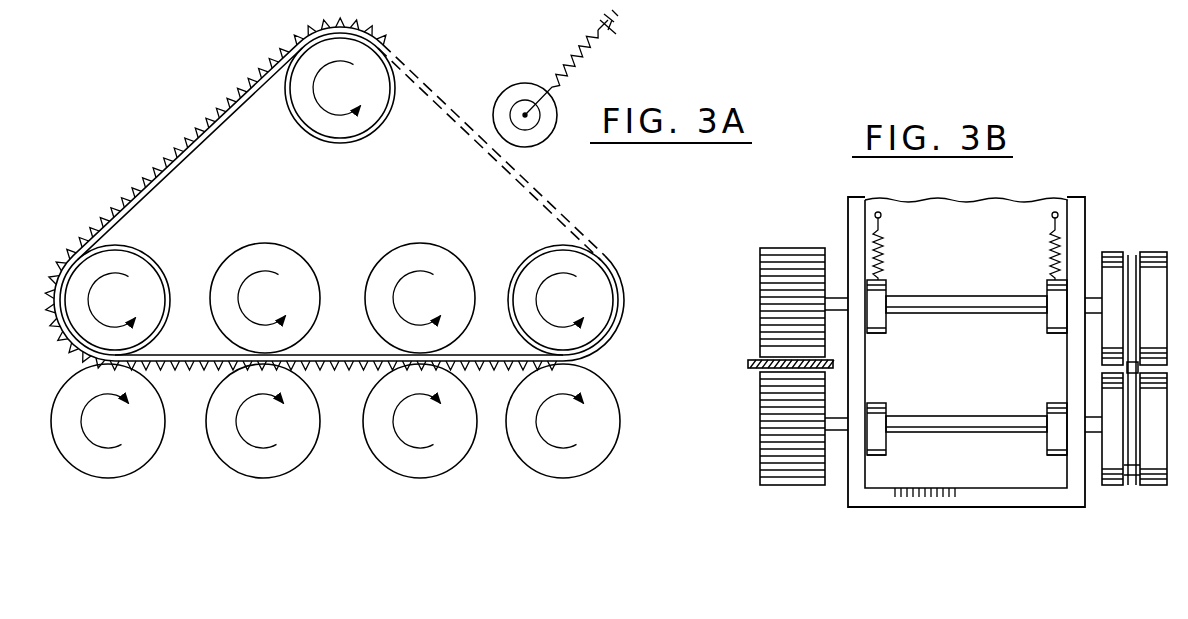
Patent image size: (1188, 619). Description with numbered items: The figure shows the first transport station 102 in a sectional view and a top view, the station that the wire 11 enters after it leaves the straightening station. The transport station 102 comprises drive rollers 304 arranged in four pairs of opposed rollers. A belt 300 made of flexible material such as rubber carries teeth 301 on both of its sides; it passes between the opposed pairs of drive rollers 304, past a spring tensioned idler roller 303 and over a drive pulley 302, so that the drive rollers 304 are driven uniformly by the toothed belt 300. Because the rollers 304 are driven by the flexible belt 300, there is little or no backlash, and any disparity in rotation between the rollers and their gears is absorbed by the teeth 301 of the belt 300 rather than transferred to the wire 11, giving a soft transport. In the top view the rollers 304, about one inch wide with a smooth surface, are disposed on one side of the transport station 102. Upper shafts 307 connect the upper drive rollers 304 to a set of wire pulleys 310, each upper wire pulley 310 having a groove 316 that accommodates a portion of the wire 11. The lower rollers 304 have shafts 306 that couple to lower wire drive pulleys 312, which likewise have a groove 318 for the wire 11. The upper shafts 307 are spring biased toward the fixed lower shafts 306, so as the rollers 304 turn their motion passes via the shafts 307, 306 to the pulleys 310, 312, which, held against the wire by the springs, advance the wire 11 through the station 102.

In FIG. 3A, the first transport station 102 is at (593, 220).
In FIG. 3B, the first transport station 102 is at (1055, 168).
In FIG. 3A, the belt 300 is at (226, 108).
In FIG. 3B, the belt 300 is at (755, 368).
In FIG. 3A, the teeth 301 is at (160, 170).
In FIG. 3A, the drive pulley 302 is at (348, 123).
In FIG. 3A, the spring tensioned idler roller 303 is at (516, 90).
In FIG. 3A, the drive rollers 304 is at (387, 252).
In FIG. 3B, the drive rollers 304 is at (795, 248).
In FIG. 3B, the shafts 306 is at (992, 415).
In FIG. 3B, the upper shafts 307 is at (992, 296).
In FIG. 3B, the wire pulleys 310 is at (1150, 252).
In FIG. 3B, the lower wire drive pulleys 312 is at (1151, 398).
In FIG. 3B, the groove 316 is at (1132, 255).
In FIG. 3B, the groove 318 is at (1128, 469).
In FIG. 3B, the wire 11 is at (1130, 360).